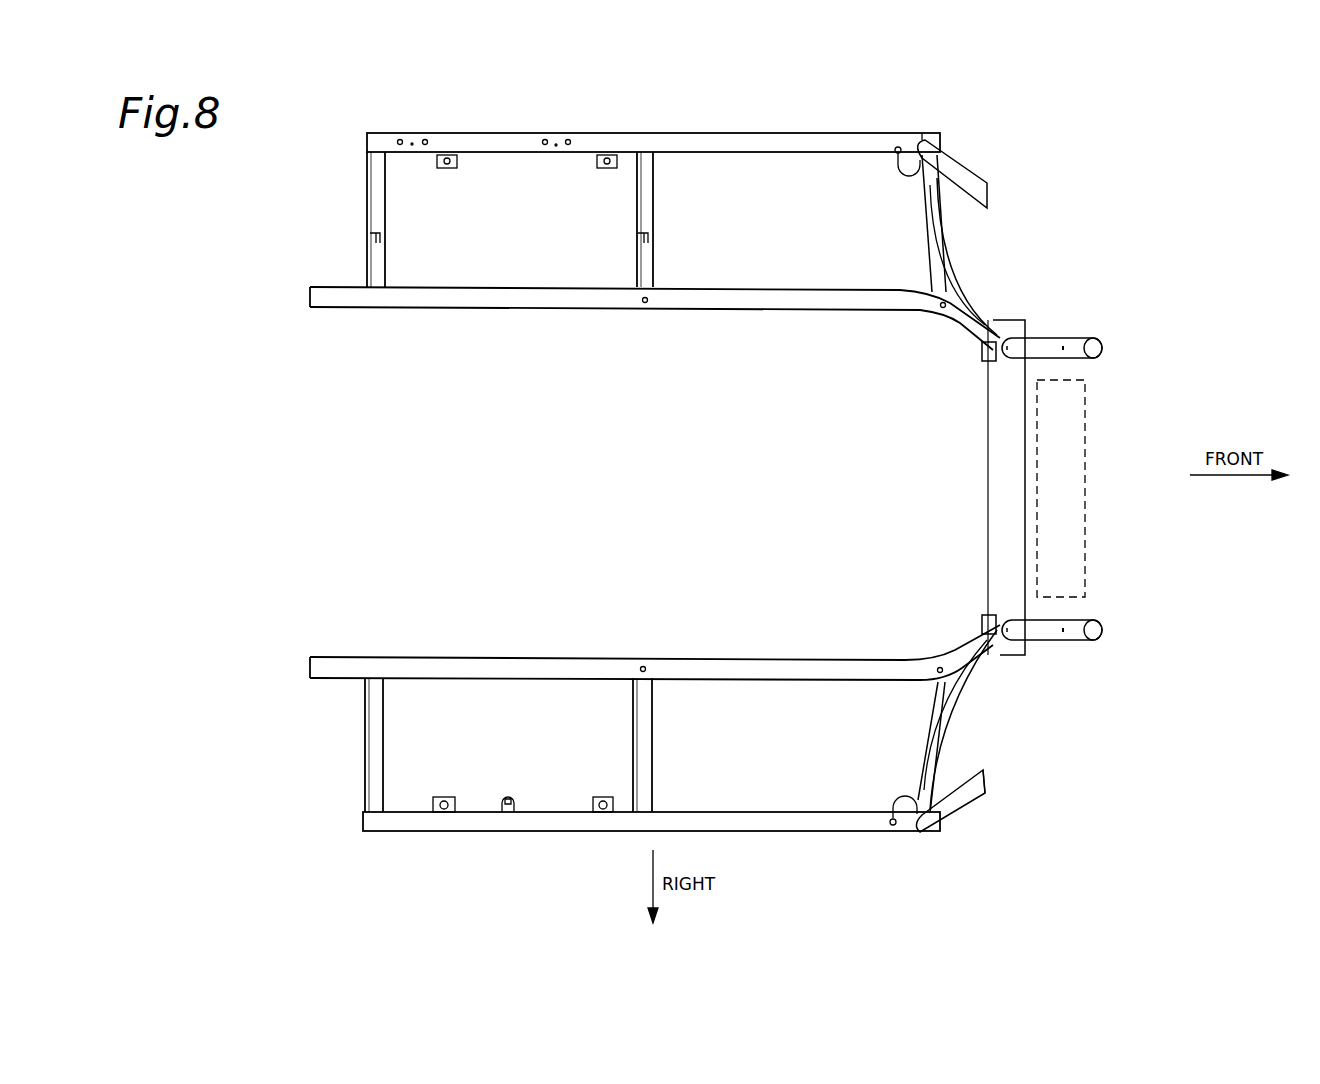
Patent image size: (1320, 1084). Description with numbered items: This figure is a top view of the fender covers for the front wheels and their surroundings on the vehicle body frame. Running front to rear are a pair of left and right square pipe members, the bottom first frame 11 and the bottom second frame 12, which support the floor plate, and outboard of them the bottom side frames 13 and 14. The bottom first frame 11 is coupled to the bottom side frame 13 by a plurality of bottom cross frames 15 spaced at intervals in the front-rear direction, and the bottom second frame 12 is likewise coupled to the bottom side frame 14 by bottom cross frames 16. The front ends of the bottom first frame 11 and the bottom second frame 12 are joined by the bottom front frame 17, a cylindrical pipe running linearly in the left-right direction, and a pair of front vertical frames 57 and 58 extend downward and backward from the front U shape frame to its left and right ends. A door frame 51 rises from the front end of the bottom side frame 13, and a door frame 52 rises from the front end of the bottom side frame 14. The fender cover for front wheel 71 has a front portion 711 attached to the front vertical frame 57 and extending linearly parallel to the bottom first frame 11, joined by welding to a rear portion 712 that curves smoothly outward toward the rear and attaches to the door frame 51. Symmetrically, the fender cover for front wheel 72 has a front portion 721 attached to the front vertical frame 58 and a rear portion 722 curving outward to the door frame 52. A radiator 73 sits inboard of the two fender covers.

The bottom first frame 11 is at (527, 668).
The bottom second frame 12 is at (548, 297).
The bottom side frame 13 is at (800, 822).
The bottom side frame 14 is at (728, 147).
The bottom cross frames 15 is at (373, 768).
The bottom cross frames 16 is at (377, 193).
The bottom front frame 17 is at (1008, 500).
The door frame 51 is at (960, 803).
The door frame 52 is at (962, 172).
The front vertical frame 57 is at (1072, 633).
The front vertical frame 58 is at (1073, 350).
The fender cover for front wheel 71 is at (1001, 721).
The fender cover for front wheel 72 is at (1009, 258).
The radiator 73 is at (1070, 421).
The front portion 711 is at (1033, 645).
The rear portion 712 is at (943, 733).
The front portion 721 is at (1037, 338).
The rear portion 722 is at (958, 275).